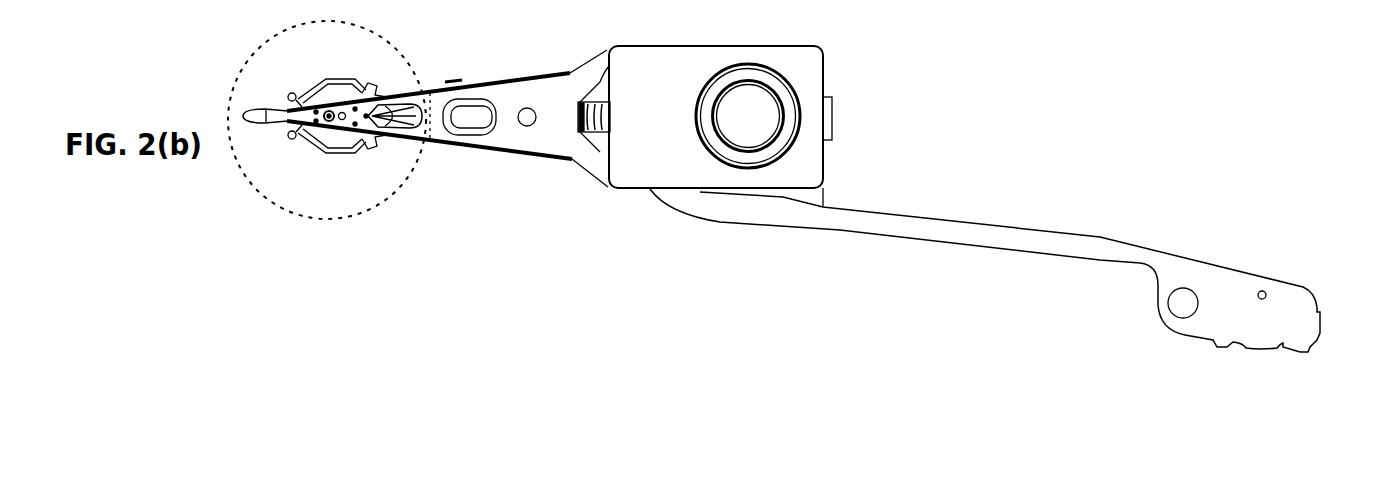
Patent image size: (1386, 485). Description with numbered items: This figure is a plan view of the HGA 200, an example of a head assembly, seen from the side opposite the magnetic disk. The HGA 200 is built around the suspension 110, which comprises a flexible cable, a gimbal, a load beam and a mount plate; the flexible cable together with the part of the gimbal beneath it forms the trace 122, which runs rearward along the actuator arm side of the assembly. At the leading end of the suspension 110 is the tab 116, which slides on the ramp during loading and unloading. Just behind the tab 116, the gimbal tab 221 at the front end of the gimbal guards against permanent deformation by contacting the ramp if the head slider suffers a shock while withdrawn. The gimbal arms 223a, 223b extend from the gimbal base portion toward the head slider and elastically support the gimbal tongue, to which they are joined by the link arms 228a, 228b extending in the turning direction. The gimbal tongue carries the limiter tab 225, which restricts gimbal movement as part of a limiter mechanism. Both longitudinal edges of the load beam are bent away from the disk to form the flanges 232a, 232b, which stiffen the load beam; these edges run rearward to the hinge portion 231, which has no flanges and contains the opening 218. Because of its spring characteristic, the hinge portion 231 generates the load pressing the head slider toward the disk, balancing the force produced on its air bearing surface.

The suspension 110 is at (447, 163).
The tab 116 is at (266, 126).
The trace 122 is at (927, 243).
The HGA 200 is at (448, 223).
The opening 218 is at (592, 73).
The gimbal tab 221 is at (291, 143).
The gimbal arm 223a is at (333, 156).
The gimbal arm 223b is at (338, 78).
The limiter tab 225 is at (284, 100).
The link arm 228a is at (356, 150).
The link arm 228b is at (373, 88).
The hinge portion 231 is at (608, 191).
The flange 232a is at (493, 153).
The flange 232b is at (498, 80).